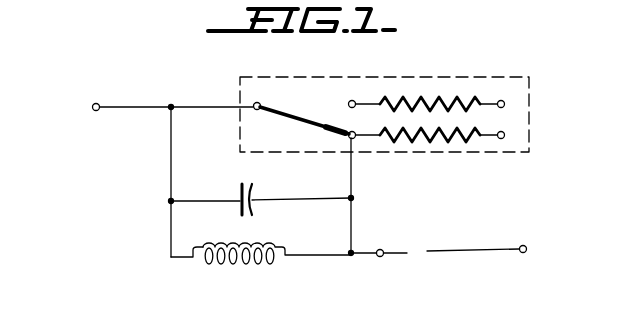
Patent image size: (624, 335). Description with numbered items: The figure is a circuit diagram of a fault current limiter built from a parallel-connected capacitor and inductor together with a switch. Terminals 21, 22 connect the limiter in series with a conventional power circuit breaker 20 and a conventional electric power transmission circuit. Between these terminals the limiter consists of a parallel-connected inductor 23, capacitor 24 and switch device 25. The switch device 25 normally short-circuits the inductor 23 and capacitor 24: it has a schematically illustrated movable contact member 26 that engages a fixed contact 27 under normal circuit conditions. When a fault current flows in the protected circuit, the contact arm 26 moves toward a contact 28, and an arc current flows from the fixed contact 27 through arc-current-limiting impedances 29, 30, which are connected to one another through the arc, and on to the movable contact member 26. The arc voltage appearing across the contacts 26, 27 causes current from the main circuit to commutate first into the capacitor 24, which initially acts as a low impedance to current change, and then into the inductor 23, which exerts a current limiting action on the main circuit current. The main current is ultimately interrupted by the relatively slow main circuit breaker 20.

The power circuit breaker 20 is at (405, 241).
The terminal 21 is at (96, 111).
The terminal 22 is at (382, 258).
The inductor 23 is at (247, 264).
The capacitor 24 is at (257, 205).
The switch device 25 is at (483, 77).
The movable contact member 26 is at (327, 98).
The fixed contact 27 is at (355, 140).
The contact 28 is at (397, 58).
The arc-current-limiting impedance 29 is at (445, 141).
The arc-current-limiting impedance 30 is at (440, 100).